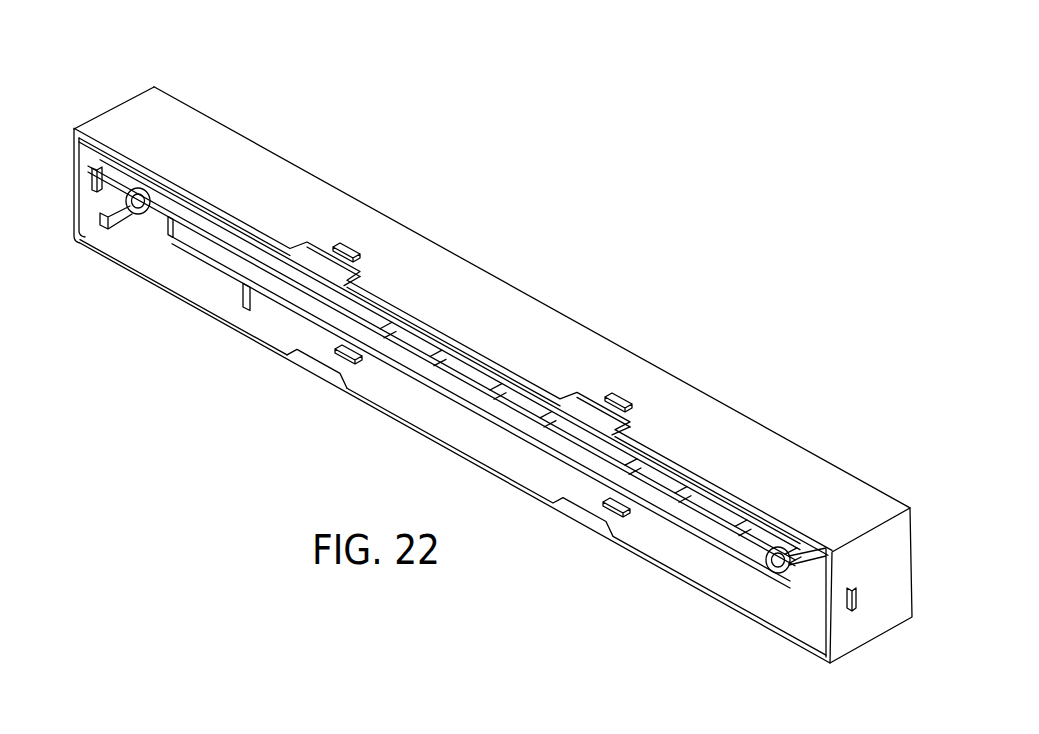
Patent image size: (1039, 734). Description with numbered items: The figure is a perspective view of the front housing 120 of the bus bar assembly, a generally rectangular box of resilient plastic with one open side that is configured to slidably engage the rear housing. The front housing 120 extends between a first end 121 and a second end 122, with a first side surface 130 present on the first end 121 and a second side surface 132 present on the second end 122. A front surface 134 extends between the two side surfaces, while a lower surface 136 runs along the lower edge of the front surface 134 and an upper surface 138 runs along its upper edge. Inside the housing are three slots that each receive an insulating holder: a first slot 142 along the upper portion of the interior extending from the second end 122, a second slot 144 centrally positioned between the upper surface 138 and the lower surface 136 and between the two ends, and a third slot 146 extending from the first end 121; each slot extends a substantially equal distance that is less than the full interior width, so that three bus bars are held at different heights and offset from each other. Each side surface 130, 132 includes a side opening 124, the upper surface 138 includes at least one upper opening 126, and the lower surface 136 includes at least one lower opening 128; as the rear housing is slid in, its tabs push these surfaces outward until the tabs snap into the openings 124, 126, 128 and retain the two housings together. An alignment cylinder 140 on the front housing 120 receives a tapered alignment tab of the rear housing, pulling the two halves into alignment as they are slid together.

The front housing 120 is at (740, 350).
The first end 121 is at (887, 563).
The second end 122 is at (100, 113).
The side opening 124 is at (93, 180).
The upper opening 126 is at (355, 245).
The lower opening 128 is at (343, 360).
The first side surface 130 is at (893, 597).
The second side surface 132 is at (131, 93).
The front surface 134 is at (480, 262).
The lower surface 136 is at (462, 463).
The upper surface 138 is at (545, 332).
The alignment cylinder 140 is at (135, 212).
The first slot 142 is at (305, 258).
The second slot 144 is at (305, 288).
The third slot 146 is at (305, 332).